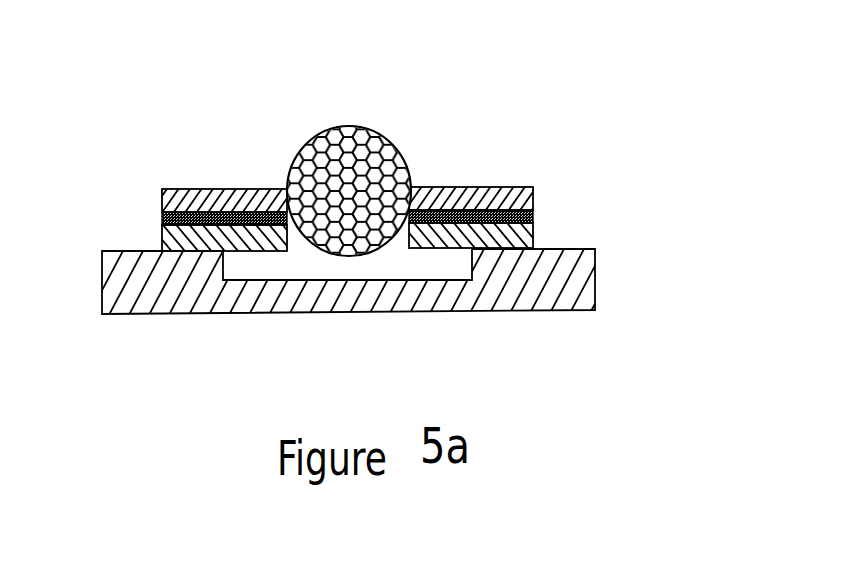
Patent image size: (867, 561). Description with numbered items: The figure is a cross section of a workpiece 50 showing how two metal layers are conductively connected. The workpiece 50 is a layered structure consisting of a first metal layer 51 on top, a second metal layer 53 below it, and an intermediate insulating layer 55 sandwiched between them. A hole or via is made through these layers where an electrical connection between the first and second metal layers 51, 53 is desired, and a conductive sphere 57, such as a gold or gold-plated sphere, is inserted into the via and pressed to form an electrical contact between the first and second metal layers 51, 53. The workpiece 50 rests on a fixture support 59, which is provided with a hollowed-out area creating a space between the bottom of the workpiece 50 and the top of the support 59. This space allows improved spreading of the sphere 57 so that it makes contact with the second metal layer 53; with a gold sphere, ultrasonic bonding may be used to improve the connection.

The workpiece 50 is at (597, 98).
The first metal layer 51 is at (223, 175).
The second metal layer 53 is at (147, 232).
The intermediate insulating layer 55 is at (148, 203).
The conductive sphere 57 is at (420, 153).
The fixture support 59 is at (255, 301).